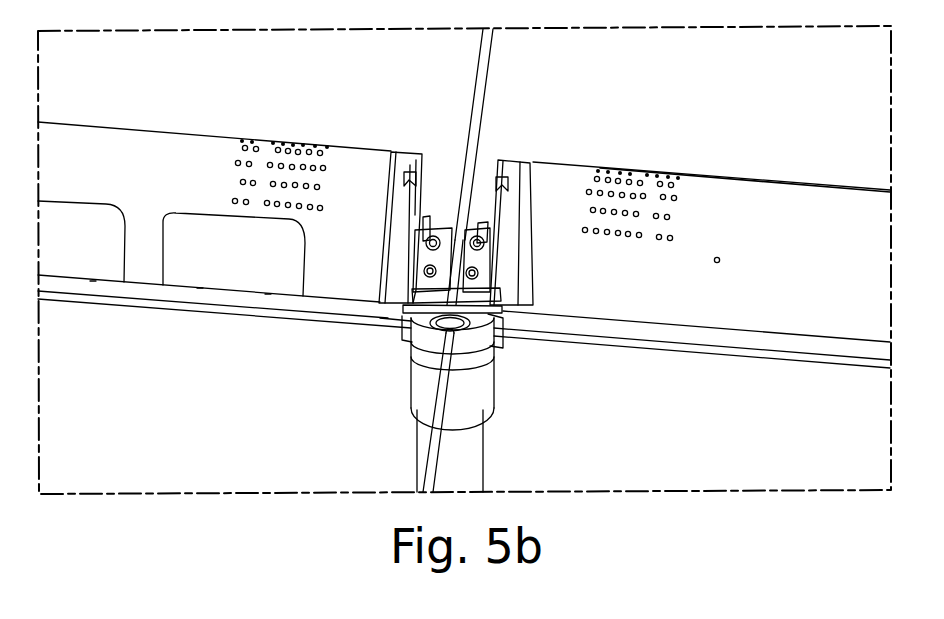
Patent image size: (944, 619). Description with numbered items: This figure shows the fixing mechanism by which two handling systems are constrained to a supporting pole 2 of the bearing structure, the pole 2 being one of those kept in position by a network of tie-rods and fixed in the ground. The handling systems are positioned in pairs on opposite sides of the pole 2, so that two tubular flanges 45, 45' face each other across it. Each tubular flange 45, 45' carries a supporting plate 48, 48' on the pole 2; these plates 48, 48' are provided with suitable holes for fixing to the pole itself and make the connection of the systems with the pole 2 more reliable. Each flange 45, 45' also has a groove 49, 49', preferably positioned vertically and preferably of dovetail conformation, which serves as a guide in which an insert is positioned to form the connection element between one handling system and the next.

The supporting pole 2 is at (467, 474).
The tubular flange 45 is at (392, 175).
The tubular flange 45' is at (534, 187).
The supporting plate 48 is at (434, 194).
The supporting plate 48' is at (540, 314).
The groove 49 is at (343, 130).
The groove 49' is at (579, 154).